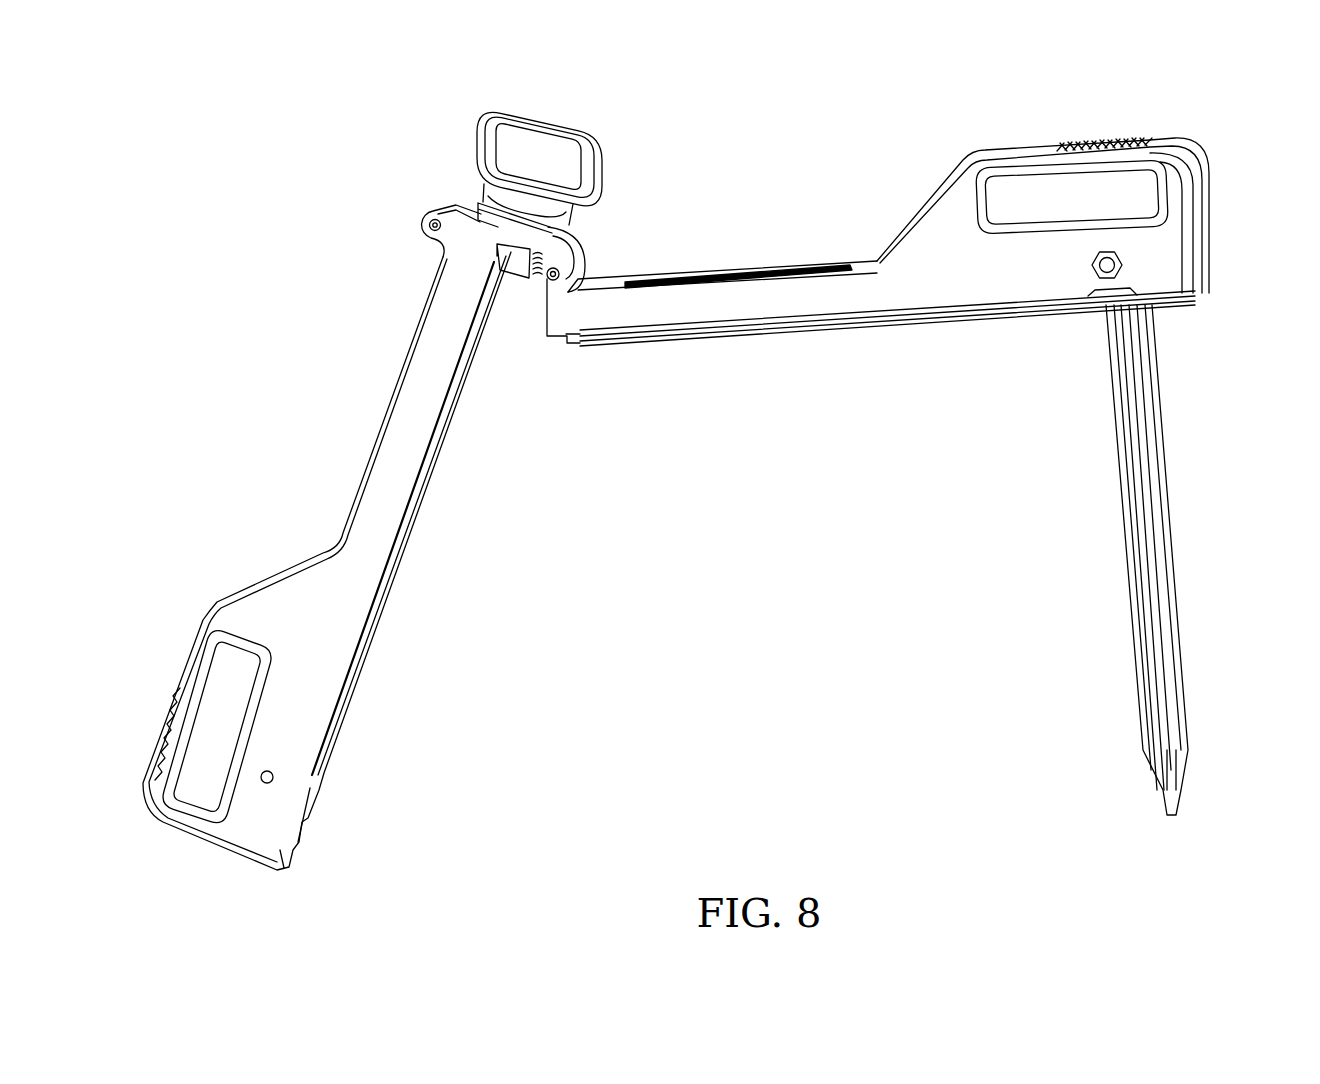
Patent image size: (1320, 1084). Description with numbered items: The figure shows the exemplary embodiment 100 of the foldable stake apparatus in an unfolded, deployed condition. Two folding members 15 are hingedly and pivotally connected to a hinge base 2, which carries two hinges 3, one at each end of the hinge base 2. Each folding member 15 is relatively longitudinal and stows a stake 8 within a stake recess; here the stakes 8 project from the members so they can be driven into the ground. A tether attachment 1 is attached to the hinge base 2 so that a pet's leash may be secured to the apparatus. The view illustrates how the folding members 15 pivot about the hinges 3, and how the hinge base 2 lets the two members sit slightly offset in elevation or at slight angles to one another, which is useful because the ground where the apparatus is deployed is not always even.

The tether attachment 1 is at (556, 116).
The hinge base 2 is at (572, 258).
The hinges 3 is at (430, 224).
The stake 8 is at (378, 569).
The folding members 15 is at (863, 310).
The embodiment 100 is at (1222, 123).